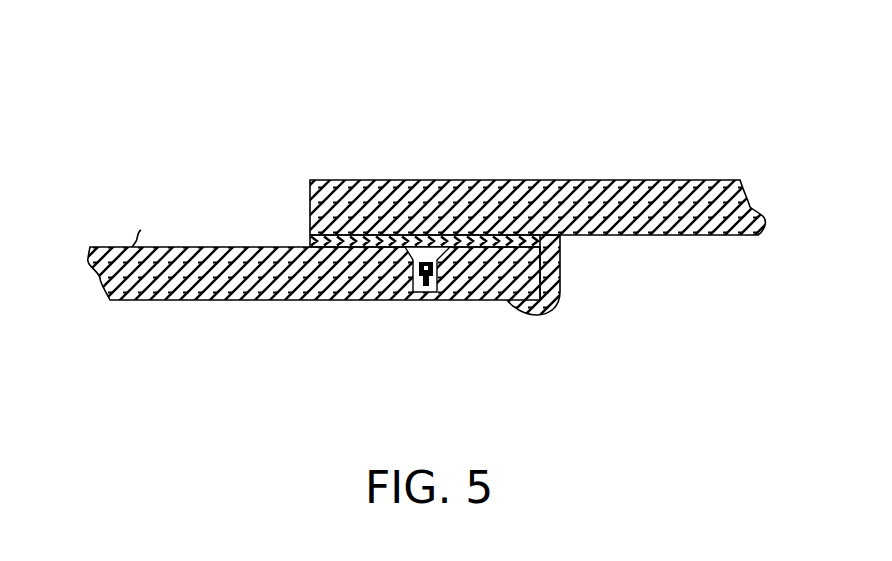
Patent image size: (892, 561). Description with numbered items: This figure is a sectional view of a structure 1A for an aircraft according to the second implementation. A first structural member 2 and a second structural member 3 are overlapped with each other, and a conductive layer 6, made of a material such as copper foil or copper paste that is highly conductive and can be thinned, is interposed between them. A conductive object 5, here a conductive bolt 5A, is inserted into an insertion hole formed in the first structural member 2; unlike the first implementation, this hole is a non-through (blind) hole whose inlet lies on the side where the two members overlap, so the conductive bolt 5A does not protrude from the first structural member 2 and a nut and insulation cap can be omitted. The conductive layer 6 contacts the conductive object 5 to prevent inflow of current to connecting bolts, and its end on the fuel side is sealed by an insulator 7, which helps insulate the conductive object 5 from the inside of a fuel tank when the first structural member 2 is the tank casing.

The structure for an aircraft 1A is at (733, 119).
The first structural member 2 is at (224, 247).
The second structural member 3 is at (628, 180).
The conductive object 5 is at (447, 286).
The conductive bolt 5A is at (440, 290).
The conductive layer 6 is at (312, 240).
The insulator 7 is at (563, 292).